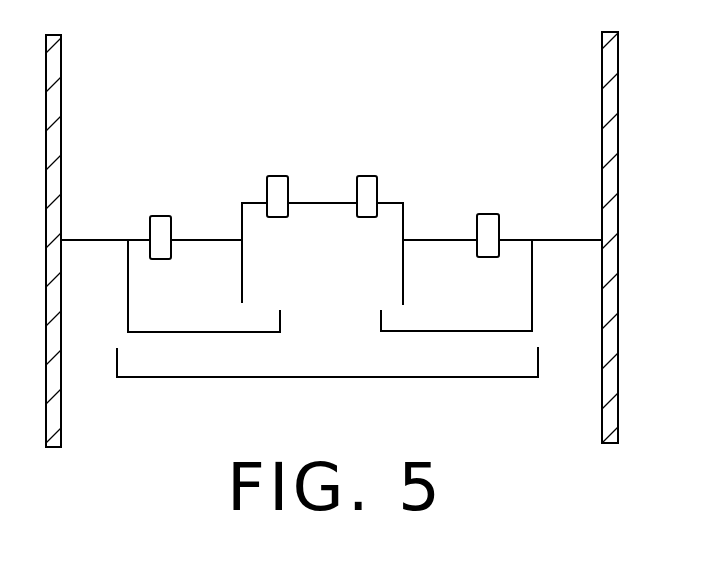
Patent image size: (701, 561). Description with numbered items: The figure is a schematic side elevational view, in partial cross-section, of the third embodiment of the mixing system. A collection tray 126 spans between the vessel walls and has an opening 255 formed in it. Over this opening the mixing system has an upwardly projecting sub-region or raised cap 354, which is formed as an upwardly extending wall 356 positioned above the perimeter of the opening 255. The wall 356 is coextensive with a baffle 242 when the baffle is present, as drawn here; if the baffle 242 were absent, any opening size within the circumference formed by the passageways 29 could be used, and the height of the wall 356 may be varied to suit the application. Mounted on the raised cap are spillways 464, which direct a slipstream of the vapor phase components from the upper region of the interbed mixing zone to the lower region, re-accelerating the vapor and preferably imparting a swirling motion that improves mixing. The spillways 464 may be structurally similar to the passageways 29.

The passageways 29 is at (140, 200).
The collection tray 126 is at (552, 240).
The baffle 242 is at (404, 265).
The opening 255 is at (242, 223).
The raised cap 354 is at (404, 208).
The upwardly extending wall 356 is at (241, 203).
The spillways 464 is at (364, 166).